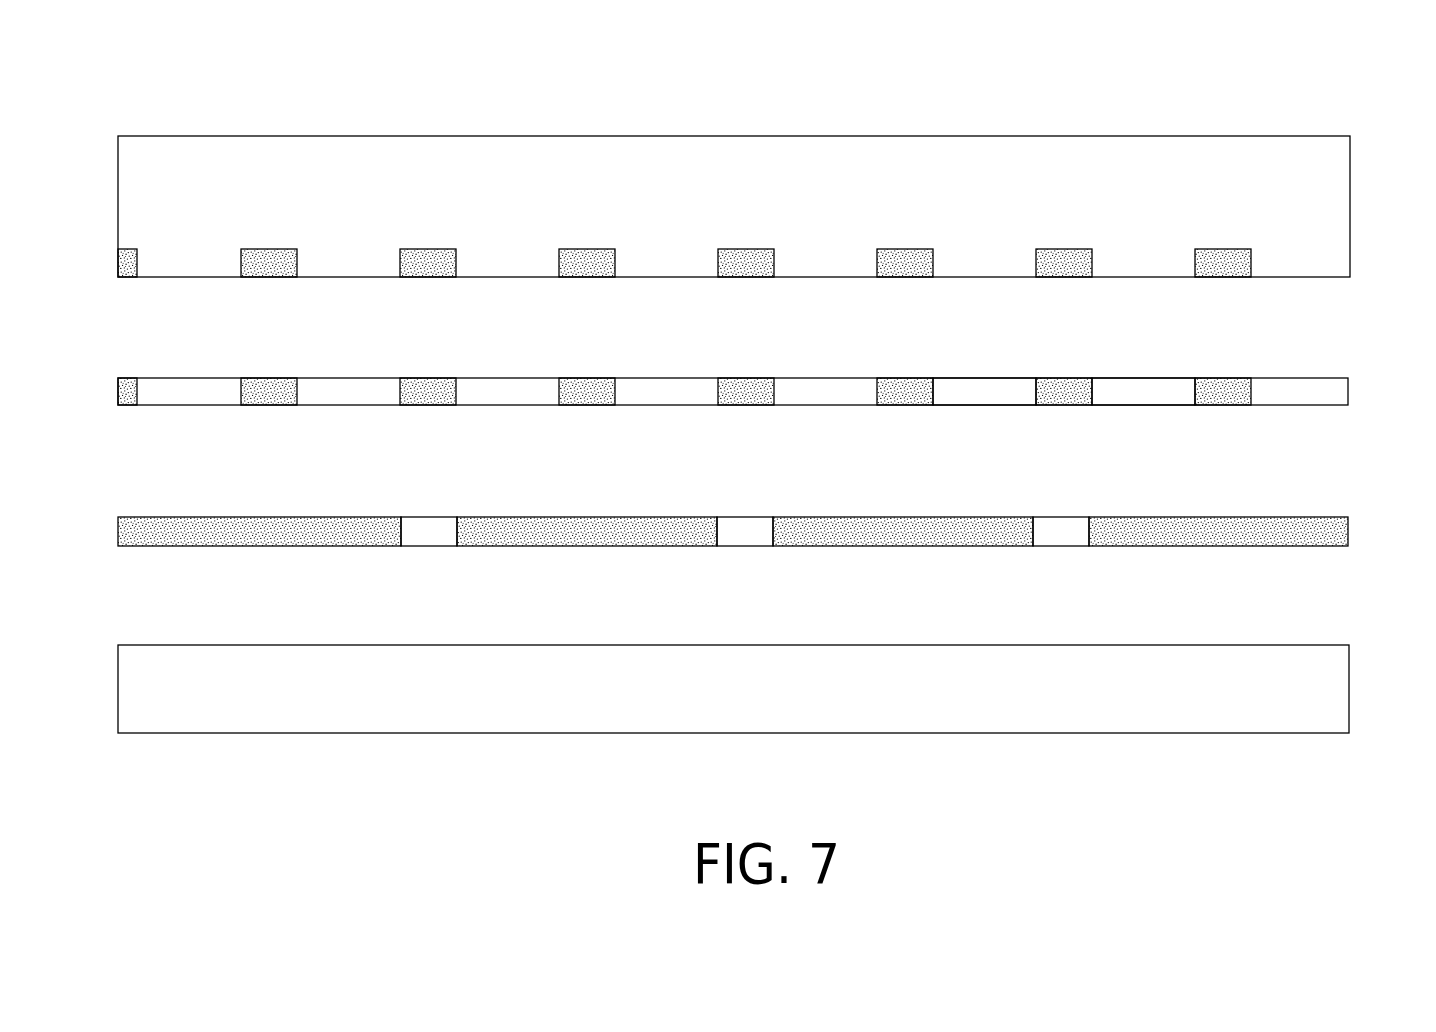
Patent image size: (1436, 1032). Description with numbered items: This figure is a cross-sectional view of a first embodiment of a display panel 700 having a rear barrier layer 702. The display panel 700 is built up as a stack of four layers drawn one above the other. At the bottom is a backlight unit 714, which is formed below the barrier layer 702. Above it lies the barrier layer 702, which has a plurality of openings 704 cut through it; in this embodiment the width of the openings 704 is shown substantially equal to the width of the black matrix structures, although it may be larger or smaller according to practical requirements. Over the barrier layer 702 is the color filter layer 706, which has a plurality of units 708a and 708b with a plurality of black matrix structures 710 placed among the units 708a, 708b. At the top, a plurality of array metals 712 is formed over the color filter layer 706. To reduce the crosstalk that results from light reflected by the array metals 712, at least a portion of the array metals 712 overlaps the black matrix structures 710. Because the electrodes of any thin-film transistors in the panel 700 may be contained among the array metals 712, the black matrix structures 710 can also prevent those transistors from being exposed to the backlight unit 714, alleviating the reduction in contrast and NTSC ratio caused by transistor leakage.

The display panel 700 is at (1415, 51).
The barrier layer 702 is at (776, 499).
The openings 704 is at (1063, 517).
The color filter layer 706 is at (776, 364).
The units 708a is at (1155, 379).
The units 708b is at (992, 379).
The black matrix structures 710 is at (910, 379).
The array metals 712 is at (1220, 250).
The backlight unit 714 is at (1340, 693).